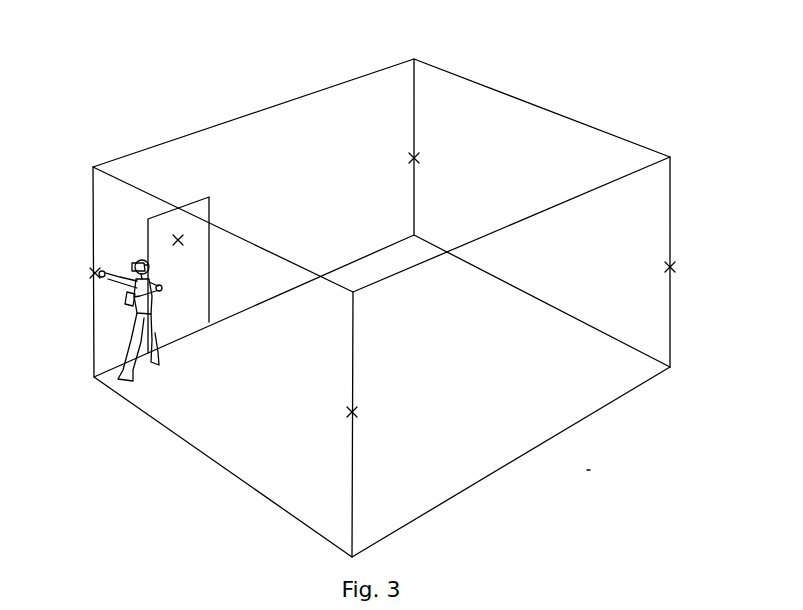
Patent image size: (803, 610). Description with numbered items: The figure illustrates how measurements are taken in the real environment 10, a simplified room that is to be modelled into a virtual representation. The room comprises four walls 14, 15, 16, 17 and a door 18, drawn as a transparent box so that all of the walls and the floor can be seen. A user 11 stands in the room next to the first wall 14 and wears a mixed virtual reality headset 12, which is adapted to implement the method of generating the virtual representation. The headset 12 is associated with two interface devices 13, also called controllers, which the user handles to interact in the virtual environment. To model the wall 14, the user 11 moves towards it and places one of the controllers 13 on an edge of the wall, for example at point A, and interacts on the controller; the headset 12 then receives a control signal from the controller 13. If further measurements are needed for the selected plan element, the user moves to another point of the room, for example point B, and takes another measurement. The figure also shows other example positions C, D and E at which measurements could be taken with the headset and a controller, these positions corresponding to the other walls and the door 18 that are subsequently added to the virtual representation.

The real environment 10 is at (587, 470).
The user 11 is at (133, 303).
The mixed virtual reality headset 12 is at (130, 270).
The interface device 13 is at (95, 278).
The wall 14 is at (200, 158).
The wall 15 is at (460, 93).
The wall 16 is at (613, 220).
The wall 17 is at (198, 397).
The door 18 is at (157, 230).
The point A is at (85, 266).
The point B is at (424, 167).
The position C is at (679, 276).
The position D is at (362, 416).
The position E is at (178, 253).